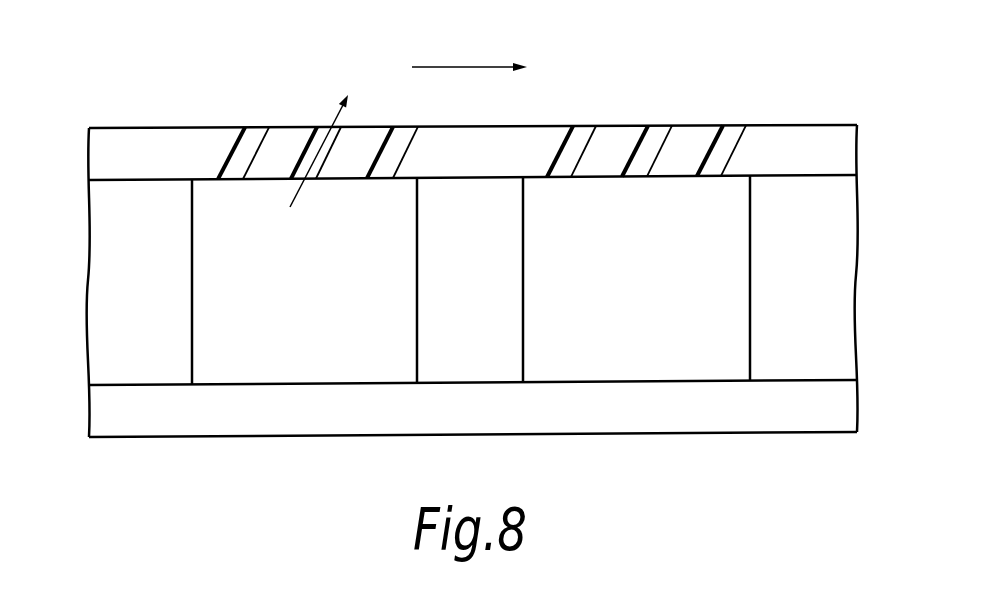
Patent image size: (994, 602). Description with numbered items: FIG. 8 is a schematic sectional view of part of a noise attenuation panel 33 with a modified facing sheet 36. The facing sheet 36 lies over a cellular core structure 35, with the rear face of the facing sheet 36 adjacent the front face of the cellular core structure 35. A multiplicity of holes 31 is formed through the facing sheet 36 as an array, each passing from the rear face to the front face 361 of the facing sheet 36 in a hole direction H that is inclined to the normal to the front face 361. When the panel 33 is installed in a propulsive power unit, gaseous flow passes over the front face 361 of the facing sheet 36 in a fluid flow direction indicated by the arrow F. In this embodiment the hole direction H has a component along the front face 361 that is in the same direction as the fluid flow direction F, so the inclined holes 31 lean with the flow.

The holes 31 is at (313, 143).
The noise attenuation panel 33 is at (330, 491).
The cellular core structure 35 is at (108, 288).
The facing sheet 36 is at (123, 142).
The front face of the facing sheet 361 is at (523, 125).
The hole direction H is at (297, 197).
The fluid flow direction F is at (463, 67).